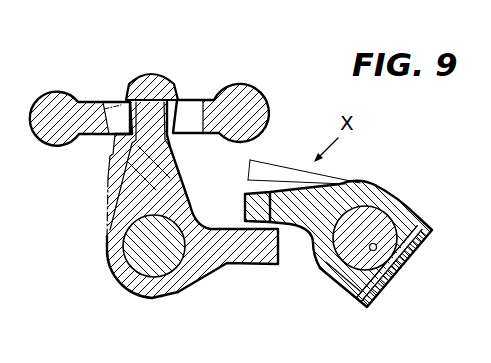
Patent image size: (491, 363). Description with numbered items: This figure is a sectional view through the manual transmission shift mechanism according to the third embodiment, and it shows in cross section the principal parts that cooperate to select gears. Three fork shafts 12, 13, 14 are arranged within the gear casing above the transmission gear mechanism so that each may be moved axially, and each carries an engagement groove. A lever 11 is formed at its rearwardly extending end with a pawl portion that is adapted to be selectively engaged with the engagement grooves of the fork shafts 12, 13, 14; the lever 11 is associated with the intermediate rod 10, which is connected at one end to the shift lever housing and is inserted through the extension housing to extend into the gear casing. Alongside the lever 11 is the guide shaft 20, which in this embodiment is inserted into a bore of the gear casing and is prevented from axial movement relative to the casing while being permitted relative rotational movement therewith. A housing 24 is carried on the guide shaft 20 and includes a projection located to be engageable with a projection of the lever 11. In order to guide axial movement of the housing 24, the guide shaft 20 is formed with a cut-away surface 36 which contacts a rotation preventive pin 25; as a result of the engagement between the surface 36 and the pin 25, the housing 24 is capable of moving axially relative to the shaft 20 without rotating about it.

The intermediate rod 10 is at (155, 272).
The lever 11 is at (114, 263).
The fork shaft 12 is at (237, 85).
The fork shaft 13 is at (150, 75).
The fork shaft 14 is at (55, 95).
The guide shaft 20 is at (371, 210).
The housing 24 is at (334, 275).
The rotation preventive pin 25 is at (418, 215).
The cut-away surface 36 is at (376, 250).